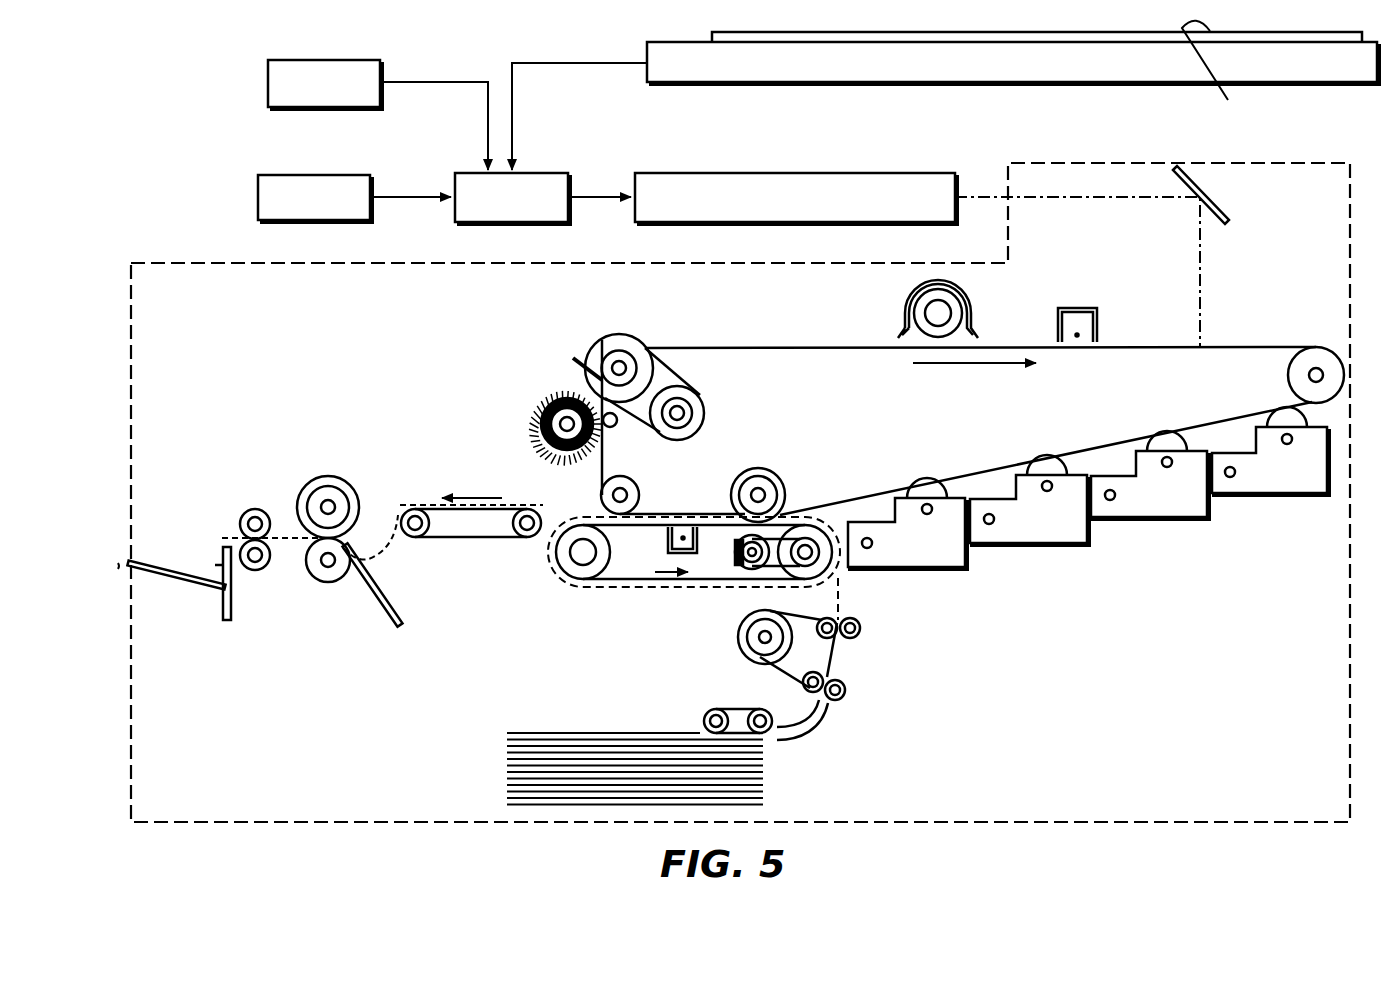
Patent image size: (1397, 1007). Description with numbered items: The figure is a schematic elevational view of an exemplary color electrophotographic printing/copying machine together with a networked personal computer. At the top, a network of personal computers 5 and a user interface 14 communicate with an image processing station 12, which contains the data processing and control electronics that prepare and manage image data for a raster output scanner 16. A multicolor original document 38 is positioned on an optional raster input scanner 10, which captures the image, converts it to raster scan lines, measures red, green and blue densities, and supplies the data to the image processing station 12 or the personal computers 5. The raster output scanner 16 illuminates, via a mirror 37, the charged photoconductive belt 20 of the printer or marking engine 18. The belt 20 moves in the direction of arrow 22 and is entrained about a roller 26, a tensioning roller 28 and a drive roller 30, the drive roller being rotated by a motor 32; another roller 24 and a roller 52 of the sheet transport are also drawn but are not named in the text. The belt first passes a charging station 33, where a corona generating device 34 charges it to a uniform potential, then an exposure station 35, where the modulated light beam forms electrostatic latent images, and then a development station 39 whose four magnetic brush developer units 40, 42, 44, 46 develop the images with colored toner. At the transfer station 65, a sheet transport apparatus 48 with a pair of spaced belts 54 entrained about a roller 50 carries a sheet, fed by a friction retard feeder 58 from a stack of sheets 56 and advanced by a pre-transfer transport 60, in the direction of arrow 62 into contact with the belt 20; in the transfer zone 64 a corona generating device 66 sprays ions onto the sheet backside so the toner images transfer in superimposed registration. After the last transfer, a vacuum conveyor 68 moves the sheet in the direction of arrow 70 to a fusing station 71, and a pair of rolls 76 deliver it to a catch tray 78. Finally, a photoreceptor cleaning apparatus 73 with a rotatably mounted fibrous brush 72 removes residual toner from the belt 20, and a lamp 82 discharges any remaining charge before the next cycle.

The personal computer network 5 is at (413, 136).
The raster input scanner 10 is at (956, 74).
The image processing station 12 is at (570, 161).
The user interface 14 is at (252, 162).
The raster output scanner 16 is at (836, 162).
The printer or marking engine 18 is at (1356, 139).
The photoconductive belt 20 is at (953, 408).
The direction arrow 22 is at (980, 366).
The roller 24 is at (634, 486).
The roller 26 is at (779, 482).
The tensioning roller 28 is at (1318, 358).
The drive roller 30 is at (601, 345).
The motor 32 is at (704, 410).
The charging station 33 is at (1118, 296).
The corona generating device 34 is at (1088, 306).
The exposure station 35 is at (1116, 256).
The mirror 37 is at (1230, 212).
The original document 38 is at (1212, 74).
The development station 39 is at (1088, 521).
The developer unit 40 is at (1290, 491).
The developer unit 42 is at (1163, 513).
The developer unit 44 is at (1043, 541).
The developer unit 46 is at (922, 566).
The sheet transport apparatus 48 is at (717, 568).
The roller 50 is at (580, 574).
The roller 52 is at (812, 560).
The belts 54 is at (598, 518).
The stack of sheets 56 is at (540, 742).
The friction retard feeder 58 is at (738, 710).
The pre-transfer transport 60 is at (838, 660).
The direction arrow 62 is at (670, 580).
The transfer zone 64 is at (675, 515).
The transfer station 65 is at (709, 533).
The corona generating device 66 is at (665, 546).
The vacuum conveyor 68 is at (471, 516).
The direction arrow 70 is at (478, 497).
The fusing station 71 is at (321, 472).
The fibrous brush 72 is at (540, 407).
The photoreceptor cleaning apparatus 73 is at (541, 394).
The rolls 76 is at (258, 508).
The catch tray 78 is at (180, 583).
The lamp 82 is at (905, 312).